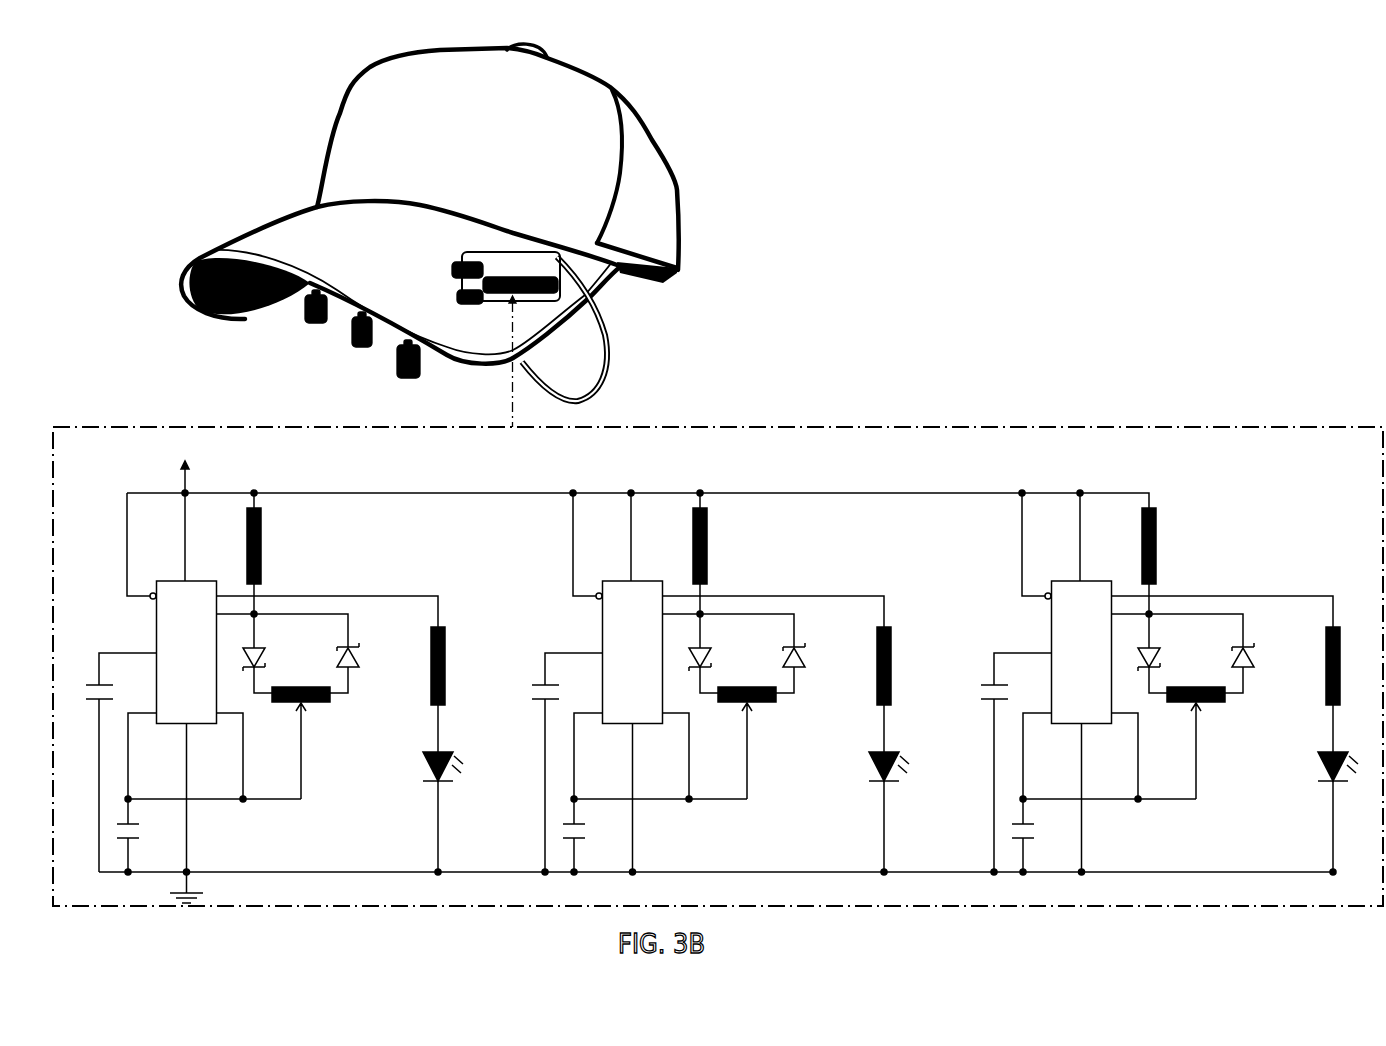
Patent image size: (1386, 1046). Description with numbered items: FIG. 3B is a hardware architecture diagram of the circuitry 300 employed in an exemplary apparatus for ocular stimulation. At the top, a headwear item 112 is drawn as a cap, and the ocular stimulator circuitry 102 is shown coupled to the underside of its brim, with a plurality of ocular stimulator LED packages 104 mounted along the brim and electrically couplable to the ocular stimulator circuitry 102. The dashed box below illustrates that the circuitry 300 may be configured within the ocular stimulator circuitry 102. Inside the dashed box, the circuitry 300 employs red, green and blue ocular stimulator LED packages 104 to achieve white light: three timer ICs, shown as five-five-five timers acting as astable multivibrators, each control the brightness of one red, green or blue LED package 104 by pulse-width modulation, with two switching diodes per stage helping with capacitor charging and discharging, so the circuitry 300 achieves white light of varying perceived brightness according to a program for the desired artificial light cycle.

The ocular stimulator circuitry 102 is at (524, 264).
The ocular stimulator LED packages 104 is at (282, 339).
The headwear item 112 is at (318, 124).
The circuitry 300 is at (1274, 499).